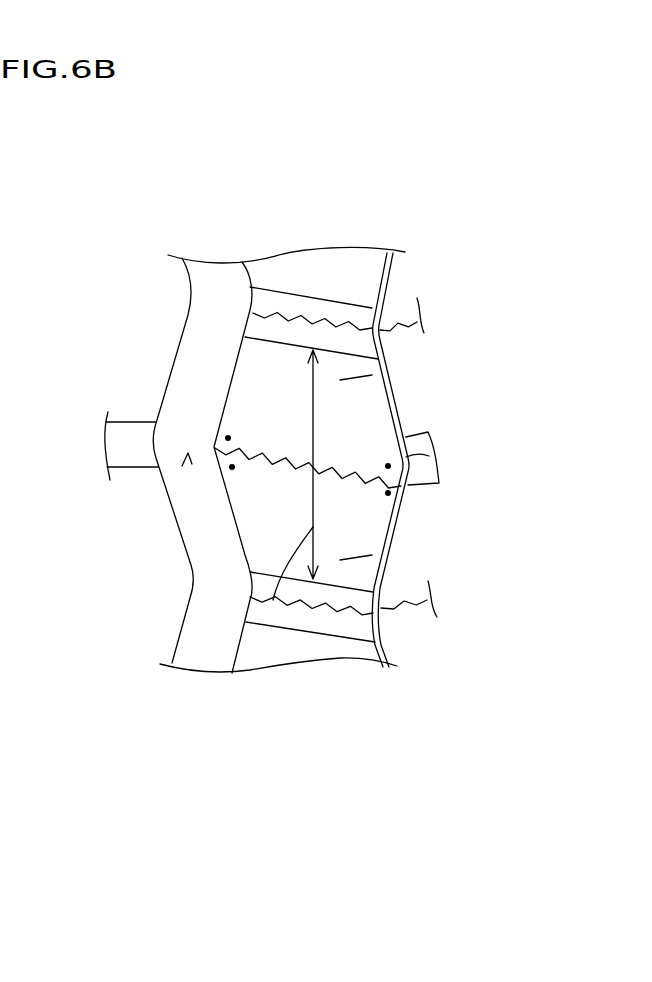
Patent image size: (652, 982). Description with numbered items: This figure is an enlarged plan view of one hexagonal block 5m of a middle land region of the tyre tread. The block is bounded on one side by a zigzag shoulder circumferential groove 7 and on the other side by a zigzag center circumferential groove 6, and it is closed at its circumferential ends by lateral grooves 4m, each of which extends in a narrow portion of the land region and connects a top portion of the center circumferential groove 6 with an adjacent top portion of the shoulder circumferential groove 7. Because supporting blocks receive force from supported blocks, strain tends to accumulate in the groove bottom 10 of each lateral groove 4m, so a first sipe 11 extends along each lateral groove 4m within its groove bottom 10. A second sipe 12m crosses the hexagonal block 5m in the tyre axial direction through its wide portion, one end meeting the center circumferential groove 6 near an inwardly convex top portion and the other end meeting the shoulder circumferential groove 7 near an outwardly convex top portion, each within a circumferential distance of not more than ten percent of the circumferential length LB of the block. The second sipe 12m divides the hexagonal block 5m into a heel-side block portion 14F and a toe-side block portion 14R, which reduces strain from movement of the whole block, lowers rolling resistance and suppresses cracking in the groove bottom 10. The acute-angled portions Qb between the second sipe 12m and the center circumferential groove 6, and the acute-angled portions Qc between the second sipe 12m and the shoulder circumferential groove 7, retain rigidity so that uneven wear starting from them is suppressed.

The shoulder circumferential groove 7 is at (217, 293).
The lateral groove 4m is at (272, 298).
The groove bottom 10 is at (312, 308).
The first sipe 11 is at (353, 320).
The center circumferential groove 6 is at (388, 282).
The second sipe 12m is at (295, 462).
The acute-angled portion Qc is at (228, 438).
The circumferential length LB is at (273, 600).
The hexagonal block 5m is at (575, 376).
The block portion 14F is at (362, 425).
The block portion 14R is at (352, 528).
The acute-angled portion Qb is at (388, 466).